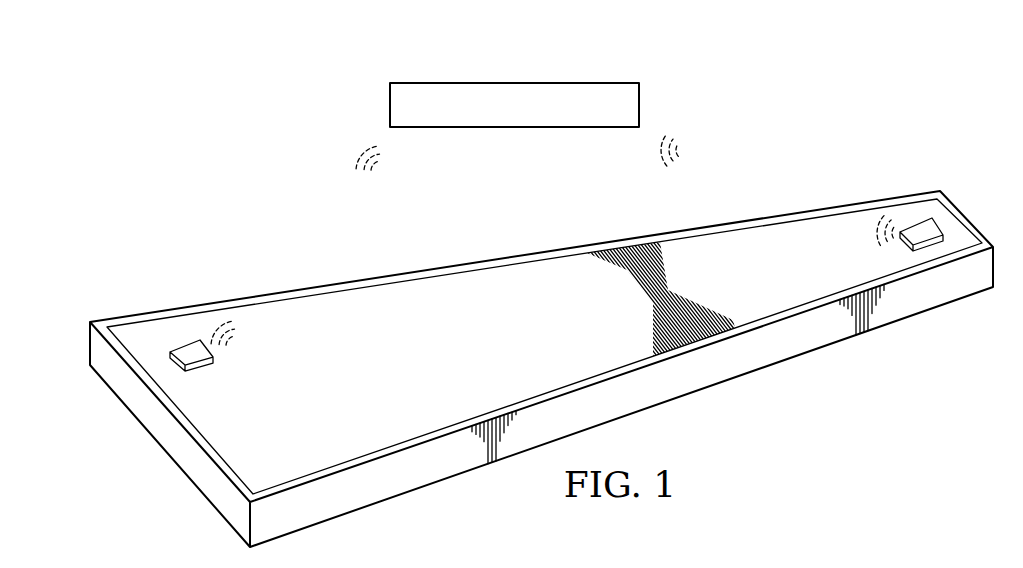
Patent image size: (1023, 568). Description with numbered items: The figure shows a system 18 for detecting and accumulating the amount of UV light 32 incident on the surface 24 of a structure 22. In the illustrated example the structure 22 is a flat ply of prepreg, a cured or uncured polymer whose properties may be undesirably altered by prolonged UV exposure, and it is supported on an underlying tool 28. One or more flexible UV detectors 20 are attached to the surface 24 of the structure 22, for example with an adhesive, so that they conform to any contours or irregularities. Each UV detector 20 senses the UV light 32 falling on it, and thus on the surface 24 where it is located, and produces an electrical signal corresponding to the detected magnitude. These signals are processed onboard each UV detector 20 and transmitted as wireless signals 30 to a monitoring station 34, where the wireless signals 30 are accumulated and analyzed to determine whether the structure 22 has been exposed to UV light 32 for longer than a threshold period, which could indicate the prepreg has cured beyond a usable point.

The system 18 is at (206, 83).
The UV light detector 20 is at (192, 352).
The structure 22 is at (358, 278).
The surface 24 is at (520, 277).
The tool 28 is at (97, 343).
The wireless signals 30 is at (243, 334).
The UV light 32 is at (228, 286).
The monitoring station 34 is at (390, 104).